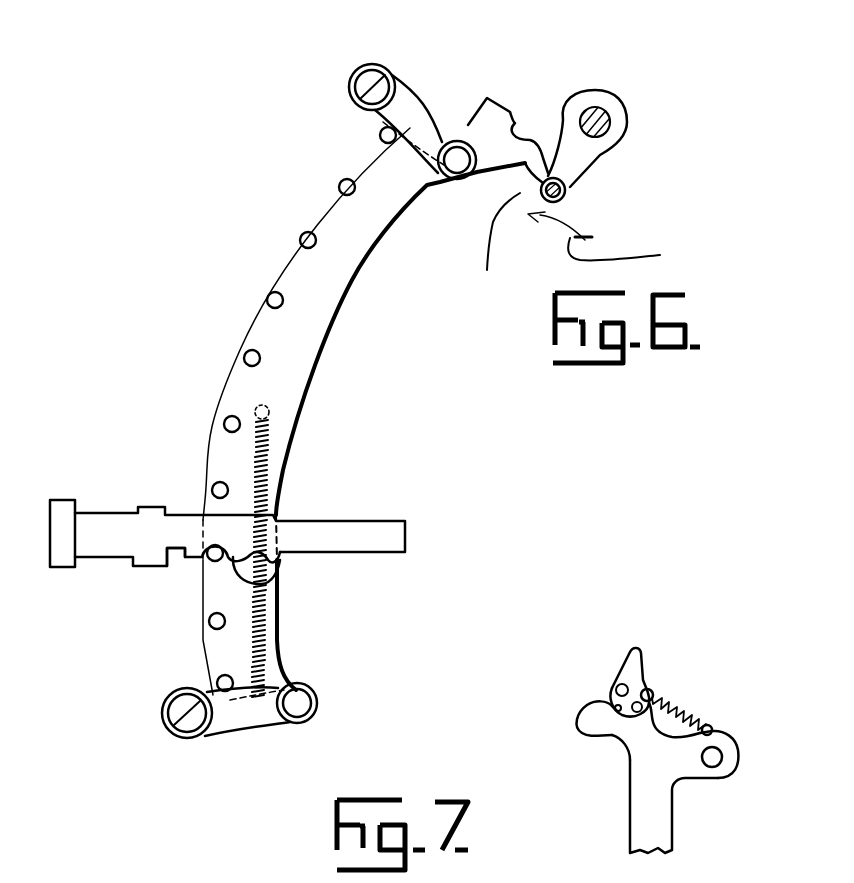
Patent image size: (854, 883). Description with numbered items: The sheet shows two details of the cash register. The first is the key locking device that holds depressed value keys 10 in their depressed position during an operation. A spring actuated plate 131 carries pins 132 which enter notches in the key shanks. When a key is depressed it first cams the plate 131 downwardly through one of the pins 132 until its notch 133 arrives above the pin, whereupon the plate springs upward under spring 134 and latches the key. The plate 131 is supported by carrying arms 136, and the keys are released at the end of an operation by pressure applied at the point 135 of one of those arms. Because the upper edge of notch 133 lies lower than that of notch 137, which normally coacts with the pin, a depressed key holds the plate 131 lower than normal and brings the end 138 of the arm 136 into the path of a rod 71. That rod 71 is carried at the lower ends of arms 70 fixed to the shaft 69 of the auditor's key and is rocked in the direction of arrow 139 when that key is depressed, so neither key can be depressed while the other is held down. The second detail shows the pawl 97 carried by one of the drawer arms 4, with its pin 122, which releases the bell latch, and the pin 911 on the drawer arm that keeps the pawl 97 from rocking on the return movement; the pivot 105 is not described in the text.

In FIG. 7, the drawer arm 4 is at (665, 830).
In FIG. 6, the value key 10 is at (70, 500).
In FIG. 6, the shaft 69 is at (612, 114).
In FIG. 6, the arm 70 is at (600, 167).
In FIG. 6, the rod 71 is at (560, 193).
In FIG. 7, the pawl 97 is at (628, 662).
In FIG. 7, the pivot 105 is at (722, 757).
In FIG. 7, the pin 122 is at (625, 735).
In FIG. 6, the plate 131 is at (318, 358).
In FIG. 6, the pin 132 is at (266, 296).
In FIG. 6, the notch 133 is at (168, 568).
In FIG. 6, the spring 134 is at (267, 487).
In FIG. 6, the point 135 is at (512, 107).
In FIG. 6, the carrying arm 136 is at (412, 93).
In FIG. 6, the notch 137 is at (237, 557).
In FIG. 6, the end of arm 138 is at (508, 232).
In FIG. 6, the arrow 139 is at (627, 239).
In FIG. 7, the pin 911 is at (618, 712).